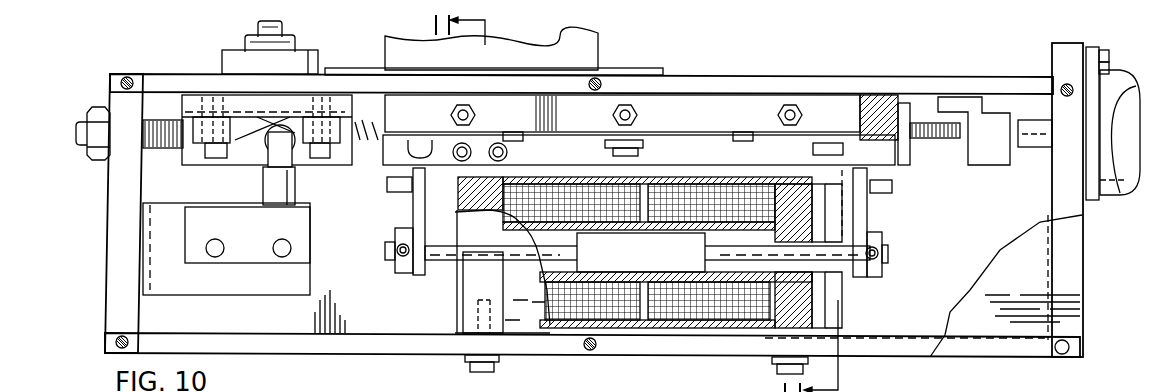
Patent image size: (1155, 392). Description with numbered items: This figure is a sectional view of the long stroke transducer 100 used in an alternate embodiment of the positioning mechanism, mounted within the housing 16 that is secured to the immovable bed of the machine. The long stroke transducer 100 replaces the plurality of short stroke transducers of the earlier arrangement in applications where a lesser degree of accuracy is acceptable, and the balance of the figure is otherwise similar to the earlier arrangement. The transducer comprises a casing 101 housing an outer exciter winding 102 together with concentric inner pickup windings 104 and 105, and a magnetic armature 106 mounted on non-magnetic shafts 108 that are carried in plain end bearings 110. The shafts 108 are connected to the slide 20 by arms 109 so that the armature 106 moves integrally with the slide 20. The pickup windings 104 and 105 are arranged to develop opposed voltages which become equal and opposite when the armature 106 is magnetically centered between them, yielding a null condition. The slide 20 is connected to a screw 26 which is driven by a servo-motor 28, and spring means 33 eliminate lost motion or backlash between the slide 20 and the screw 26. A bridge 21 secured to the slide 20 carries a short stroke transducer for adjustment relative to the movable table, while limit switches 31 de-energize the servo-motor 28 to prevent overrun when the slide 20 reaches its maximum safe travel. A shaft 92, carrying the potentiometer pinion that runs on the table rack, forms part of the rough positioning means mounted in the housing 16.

The housing 16 is at (728, 72).
The slide 20 is at (883, 157).
The bridge 21 is at (585, 55).
The screw 26 is at (918, 138).
The servo-motor 28 is at (1118, 190).
The limit switches 31 is at (303, 252).
The spring means 33 is at (365, 107).
The shaft 92 is at (258, 25).
The long stroke transducer 100 is at (848, 314).
The casing 101 is at (670, 177).
The outer exciter winding 102 is at (603, 315).
The inner pickup winding 104 is at (620, 210).
The inner pickup winding 105 is at (690, 212).
The magnetic armature 106 is at (660, 258).
The non-magnetic shafts 108 is at (448, 262).
The arms 109 is at (418, 217).
The plain end bearings 110 is at (458, 197).